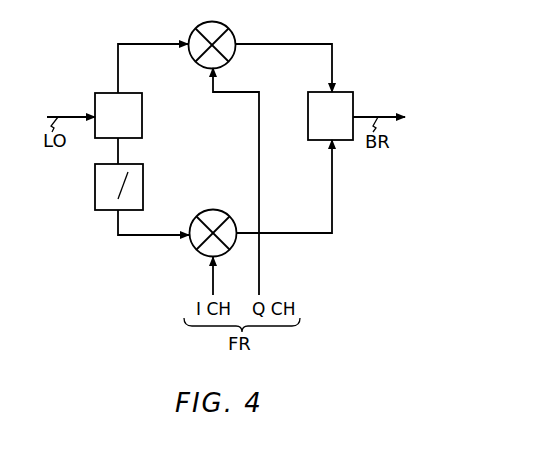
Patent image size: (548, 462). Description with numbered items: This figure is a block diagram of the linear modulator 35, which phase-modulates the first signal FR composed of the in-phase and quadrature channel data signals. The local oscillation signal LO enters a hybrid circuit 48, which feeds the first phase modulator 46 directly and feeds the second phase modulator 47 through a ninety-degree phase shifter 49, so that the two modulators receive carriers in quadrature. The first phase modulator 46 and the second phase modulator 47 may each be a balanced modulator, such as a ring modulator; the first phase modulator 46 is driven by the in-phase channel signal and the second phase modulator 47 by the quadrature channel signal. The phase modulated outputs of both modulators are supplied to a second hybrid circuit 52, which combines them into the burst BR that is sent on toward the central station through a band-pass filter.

The linear modulator 35 is at (103, 250).
The first phase modulator 46 is at (230, 34).
The second phase modulator 47 is at (212, 210).
The hybrid circuit 48 is at (142, 112).
The pi/2 phase shifter 49 is at (143, 190).
The second hybrid circuit 52 is at (340, 92).